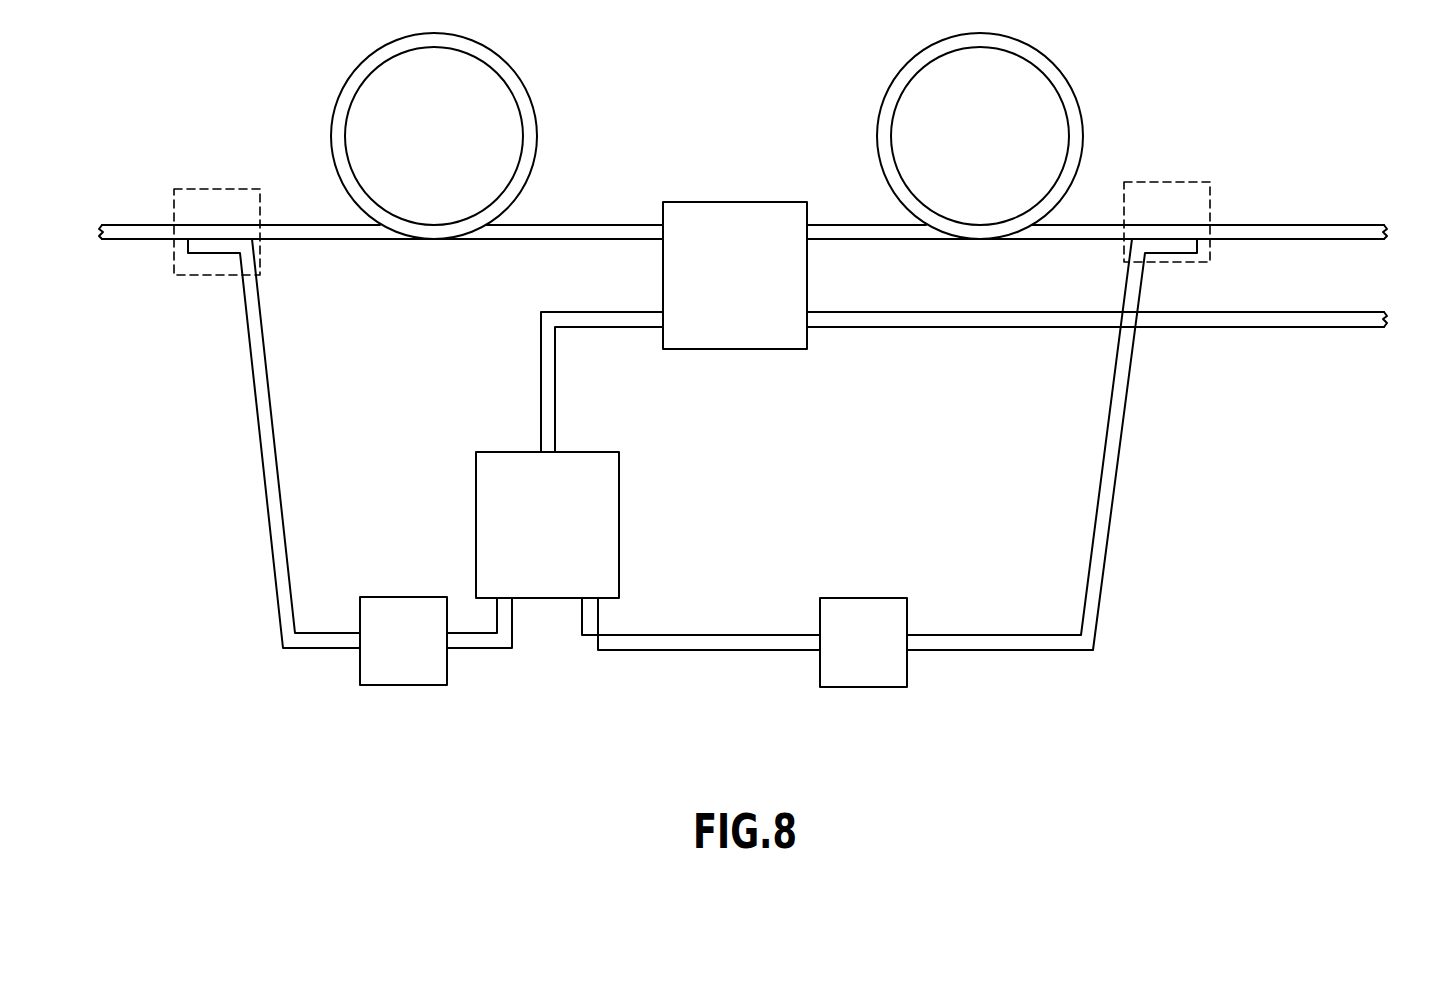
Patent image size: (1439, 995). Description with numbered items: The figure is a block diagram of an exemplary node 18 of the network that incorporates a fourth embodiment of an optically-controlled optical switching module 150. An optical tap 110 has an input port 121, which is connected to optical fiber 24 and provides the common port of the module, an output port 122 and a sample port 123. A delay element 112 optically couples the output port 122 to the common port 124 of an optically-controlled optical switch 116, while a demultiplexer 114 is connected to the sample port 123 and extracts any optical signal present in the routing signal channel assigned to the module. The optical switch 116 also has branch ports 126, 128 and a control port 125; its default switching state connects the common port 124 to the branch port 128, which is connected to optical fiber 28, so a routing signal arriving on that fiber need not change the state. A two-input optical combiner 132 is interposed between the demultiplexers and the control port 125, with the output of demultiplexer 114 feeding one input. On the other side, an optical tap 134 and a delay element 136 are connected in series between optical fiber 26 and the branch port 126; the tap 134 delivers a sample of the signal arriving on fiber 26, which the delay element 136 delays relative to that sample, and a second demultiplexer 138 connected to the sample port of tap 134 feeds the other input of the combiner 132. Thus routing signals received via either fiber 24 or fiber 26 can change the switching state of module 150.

The node 18 is at (722, 60).
The optical switching module 150 is at (757, 138).
The optical fiber 24 is at (168, 242).
The optical fiber 26 is at (1378, 225).
The optical fiber 28 is at (1367, 332).
The optical tap 110 is at (212, 280).
The delay element 112 is at (522, 80).
The demultiplexer 114 is at (403, 687).
The optically-controlled optical switch 116 is at (733, 350).
The input port 121 is at (173, 232).
The output port 122 is at (260, 232).
The sample port 123 is at (252, 275).
The common port 124 is at (662, 233).
The control port 125 is at (660, 322).
The branch port 126 is at (807, 232).
The branch port 128 is at (807, 320).
The optical combiner 132 is at (475, 505).
The optical tap 134 is at (1168, 182).
The delay element 136 is at (1053, 63).
The demultiplexer 138 is at (863, 688).